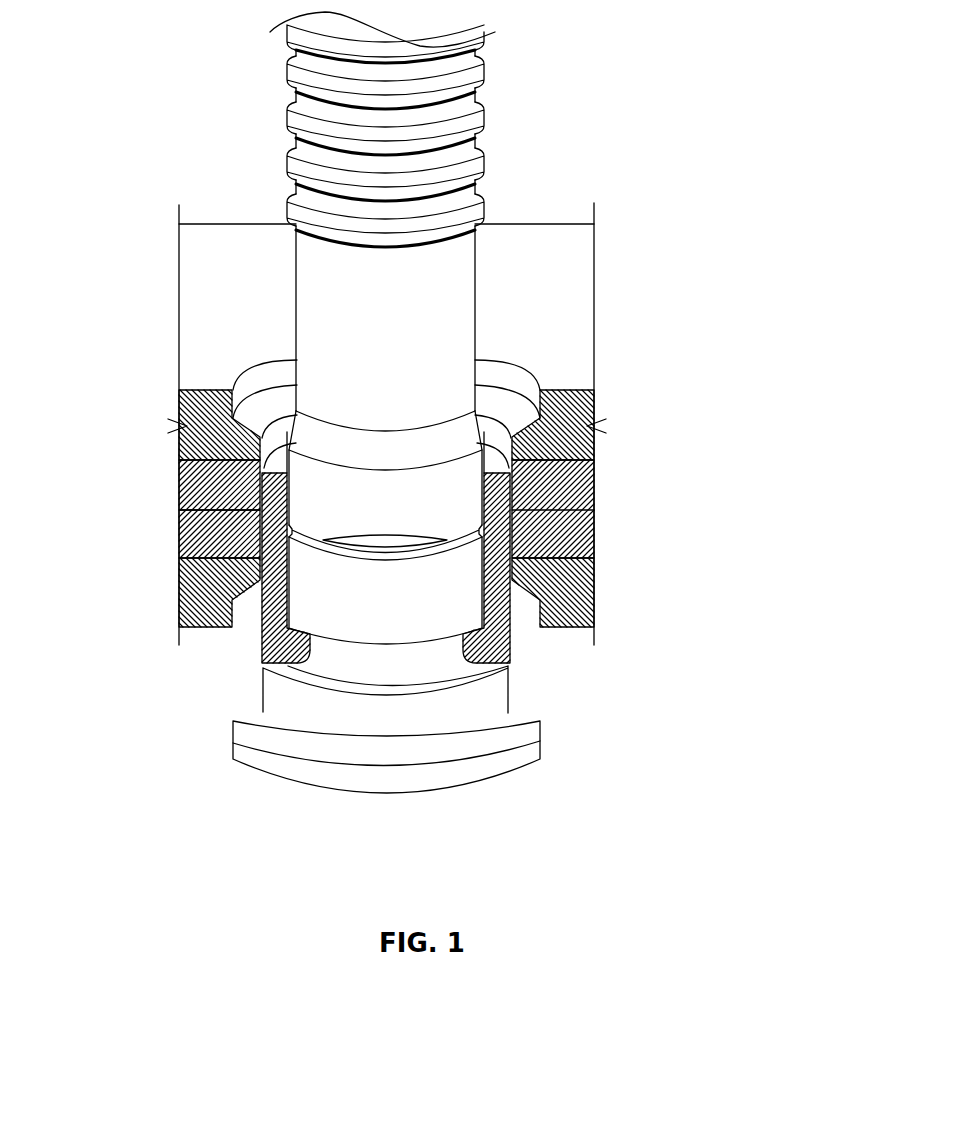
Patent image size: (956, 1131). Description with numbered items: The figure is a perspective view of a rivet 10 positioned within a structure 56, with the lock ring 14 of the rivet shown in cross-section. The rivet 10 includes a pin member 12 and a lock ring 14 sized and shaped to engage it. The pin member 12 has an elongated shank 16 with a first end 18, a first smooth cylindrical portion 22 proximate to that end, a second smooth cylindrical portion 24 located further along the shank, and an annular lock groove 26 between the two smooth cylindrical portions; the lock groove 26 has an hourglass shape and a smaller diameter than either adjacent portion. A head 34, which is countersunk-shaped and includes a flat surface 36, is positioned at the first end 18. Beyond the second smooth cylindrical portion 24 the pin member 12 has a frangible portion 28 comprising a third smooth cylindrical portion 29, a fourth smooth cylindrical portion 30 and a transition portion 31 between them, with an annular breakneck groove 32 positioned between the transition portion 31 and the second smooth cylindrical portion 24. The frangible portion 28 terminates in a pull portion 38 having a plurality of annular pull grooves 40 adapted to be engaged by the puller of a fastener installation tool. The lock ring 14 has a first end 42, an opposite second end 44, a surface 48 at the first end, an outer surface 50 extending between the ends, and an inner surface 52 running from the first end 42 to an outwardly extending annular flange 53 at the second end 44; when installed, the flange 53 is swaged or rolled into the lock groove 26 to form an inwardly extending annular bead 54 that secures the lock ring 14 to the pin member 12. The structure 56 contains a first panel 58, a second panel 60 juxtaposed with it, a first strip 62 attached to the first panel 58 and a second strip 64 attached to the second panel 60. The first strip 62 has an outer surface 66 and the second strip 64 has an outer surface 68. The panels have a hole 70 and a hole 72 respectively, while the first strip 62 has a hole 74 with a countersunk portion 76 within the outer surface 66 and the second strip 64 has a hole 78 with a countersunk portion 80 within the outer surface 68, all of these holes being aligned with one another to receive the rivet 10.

The rivet 10 is at (158, 58).
The pin member 12 is at (512, 698).
The lock ring 14 is at (470, 572).
The elongated shank 16 is at (457, 300).
The first end 18 is at (247, 710).
The first smooth cylindrical portion 22 is at (343, 712).
The second smooth cylindrical portion 24 is at (468, 568).
The annular lock groove 26 is at (337, 668).
The frangible portion 28 is at (313, 504).
The third smooth cylindrical portion 29 is at (437, 278).
The fourth smooth cylindrical portion 30 is at (458, 495).
The transition portion 31 is at (447, 445).
The annular breakneck groove 32 is at (420, 546).
The head 34 is at (527, 757).
The flat surface 36 is at (520, 770).
The pull portion 38 is at (487, 214).
The annular pull grooves 40 is at (487, 154).
The first end 42 is at (508, 402).
The second end 44 is at (510, 672).
The surface 48 is at (283, 468).
The outer surface 50 is at (515, 632).
The inner surface 52 is at (482, 607).
The annular flange 53 is at (263, 672).
The annular bead 54 is at (503, 640).
The structure 56 is at (170, 320).
The first panel 58 is at (190, 484).
The second panel 60 is at (188, 534).
The first strip 62 is at (190, 444).
The second strip 64 is at (195, 598).
The outer surface 66 is at (192, 276).
The outer surface 68 is at (188, 636).
The hole 70 is at (518, 465).
The hole 72 is at (520, 523).
The hole 74 is at (548, 407).
The countersunk portion 76 is at (500, 377).
The hole 78 is at (550, 612).
The countersunk portion 80 is at (508, 622).